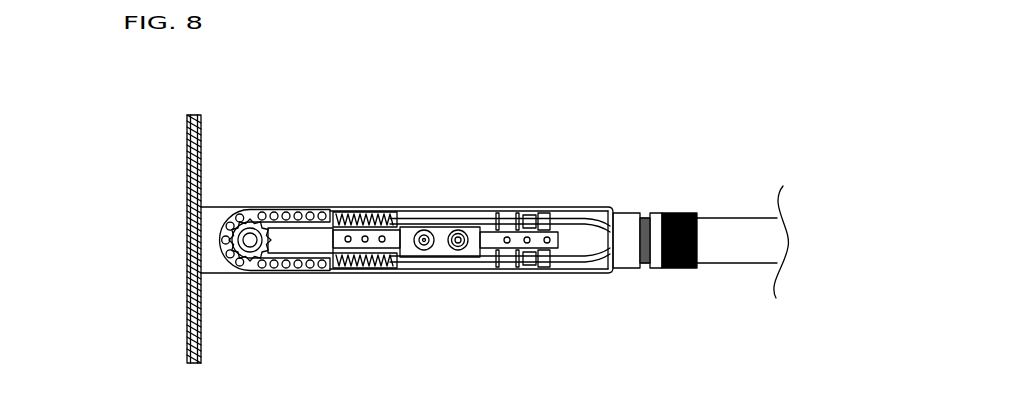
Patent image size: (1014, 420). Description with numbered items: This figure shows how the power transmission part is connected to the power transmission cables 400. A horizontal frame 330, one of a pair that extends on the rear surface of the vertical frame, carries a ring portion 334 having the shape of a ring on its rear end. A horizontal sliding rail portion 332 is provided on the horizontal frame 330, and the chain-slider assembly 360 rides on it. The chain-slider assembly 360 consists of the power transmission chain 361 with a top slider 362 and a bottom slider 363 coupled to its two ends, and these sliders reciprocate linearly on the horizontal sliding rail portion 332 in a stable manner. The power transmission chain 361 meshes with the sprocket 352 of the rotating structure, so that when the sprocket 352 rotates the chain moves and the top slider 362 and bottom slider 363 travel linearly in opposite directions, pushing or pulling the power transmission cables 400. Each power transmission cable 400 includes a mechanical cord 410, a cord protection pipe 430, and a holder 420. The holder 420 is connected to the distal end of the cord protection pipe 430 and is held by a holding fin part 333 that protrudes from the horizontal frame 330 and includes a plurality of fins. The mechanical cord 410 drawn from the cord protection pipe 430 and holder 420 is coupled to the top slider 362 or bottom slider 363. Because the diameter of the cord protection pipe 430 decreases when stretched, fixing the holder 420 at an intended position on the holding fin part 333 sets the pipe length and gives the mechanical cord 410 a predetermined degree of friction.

The horizontal frame 330 is at (210, 218).
The horizontal sliding rail portion 332 is at (411, 207).
The holding fin part 333 is at (462, 262).
The ring portion 334 is at (613, 273).
The sprocket 352 is at (262, 273).
The chain-slider assembly 360 is at (307, 122).
The power transmission chain 361 is at (282, 207).
The top slider 362 is at (337, 207).
The bottom slider 363 is at (340, 270).
The power transmission cable 400 is at (490, 122).
The mechanical cord 410 is at (467, 207).
The holder 420 is at (532, 207).
The cord protection pipe 430 is at (583, 215).